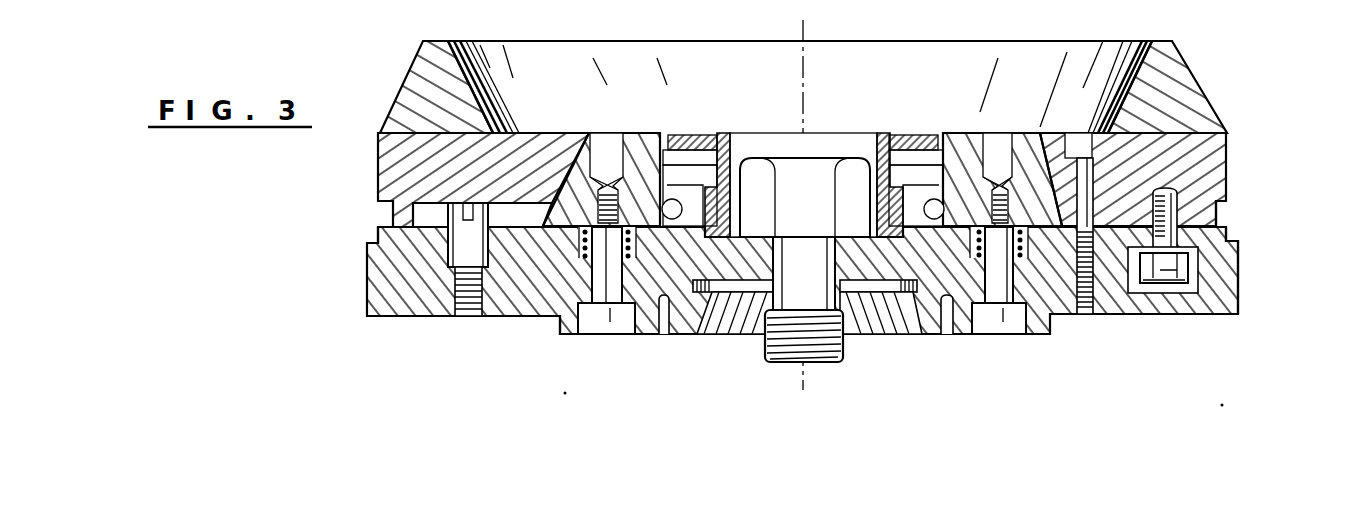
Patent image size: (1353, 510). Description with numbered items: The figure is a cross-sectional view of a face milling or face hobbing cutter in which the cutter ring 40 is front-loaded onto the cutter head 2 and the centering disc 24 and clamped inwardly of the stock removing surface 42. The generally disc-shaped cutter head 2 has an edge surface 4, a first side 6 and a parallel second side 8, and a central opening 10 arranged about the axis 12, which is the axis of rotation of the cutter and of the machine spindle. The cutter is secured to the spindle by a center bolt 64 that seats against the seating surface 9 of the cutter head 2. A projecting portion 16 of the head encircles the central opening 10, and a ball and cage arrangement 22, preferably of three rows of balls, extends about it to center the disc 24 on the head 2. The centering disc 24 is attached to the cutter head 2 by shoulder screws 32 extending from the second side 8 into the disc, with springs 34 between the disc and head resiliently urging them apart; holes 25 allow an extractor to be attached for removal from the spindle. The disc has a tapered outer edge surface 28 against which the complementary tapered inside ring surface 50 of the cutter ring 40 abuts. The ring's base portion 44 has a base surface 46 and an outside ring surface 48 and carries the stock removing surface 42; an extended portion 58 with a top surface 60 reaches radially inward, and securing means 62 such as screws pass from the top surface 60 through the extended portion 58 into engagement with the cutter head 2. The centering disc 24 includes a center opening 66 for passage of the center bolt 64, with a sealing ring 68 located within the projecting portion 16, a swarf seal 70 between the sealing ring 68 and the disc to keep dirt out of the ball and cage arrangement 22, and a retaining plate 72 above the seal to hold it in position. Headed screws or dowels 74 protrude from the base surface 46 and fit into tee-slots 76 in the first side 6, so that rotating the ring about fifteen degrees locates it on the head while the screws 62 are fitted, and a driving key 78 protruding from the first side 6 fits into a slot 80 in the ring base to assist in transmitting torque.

The cutter head 2 is at (403, 308).
The edge surface 4 is at (367, 293).
The first side 6 is at (366, 258).
The second side 8 is at (535, 312).
The seating surface 9 is at (755, 223).
The central opening 10 is at (895, 318).
The axis 12 is at (807, 62).
The projecting portion 16 is at (870, 202).
The ball and cage arrangement 22 is at (683, 218).
The centering disc 24 is at (600, 140).
The holes 25 is at (648, 136).
The outer edge surface 28 is at (1042, 165).
The shoulder screws 32 is at (1005, 310).
The springs 34 is at (1025, 245).
The cutter ring 40 is at (1233, 122).
The stock removing surface 42 is at (1187, 83).
The base portion 44 is at (1218, 162).
The base surface 46 is at (1218, 210).
The outside ring surface 48 is at (378, 160).
The tapered inside ring surface 50 is at (560, 152).
The extended portion 58 is at (524, 150).
The top surface 60 is at (545, 150).
The securing means 62 is at (1078, 138).
The center bolt 64 is at (777, 362).
The center opening 66 is at (870, 138).
The sealing ring 68 is at (740, 152).
The swarf seal 70 is at (913, 136).
The retaining plate 72 is at (908, 135).
The headed screws or dowels 74 is at (1237, 275).
The tee-slots 76 is at (1197, 260).
The driving key 78 is at (480, 252).
The slot 80 is at (434, 215).